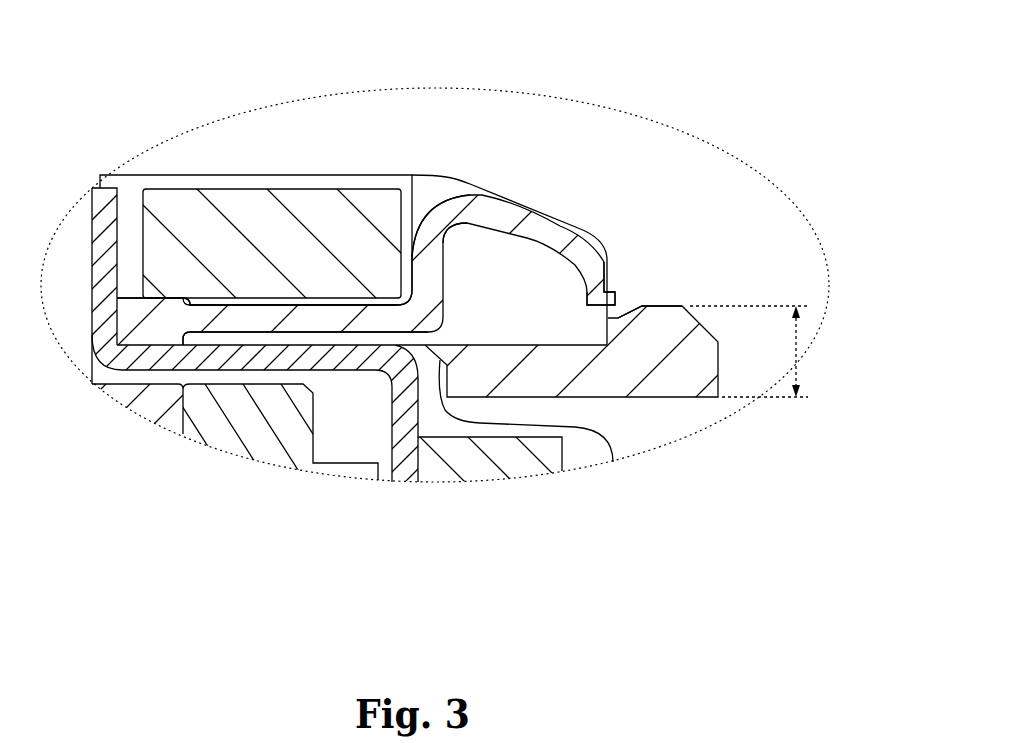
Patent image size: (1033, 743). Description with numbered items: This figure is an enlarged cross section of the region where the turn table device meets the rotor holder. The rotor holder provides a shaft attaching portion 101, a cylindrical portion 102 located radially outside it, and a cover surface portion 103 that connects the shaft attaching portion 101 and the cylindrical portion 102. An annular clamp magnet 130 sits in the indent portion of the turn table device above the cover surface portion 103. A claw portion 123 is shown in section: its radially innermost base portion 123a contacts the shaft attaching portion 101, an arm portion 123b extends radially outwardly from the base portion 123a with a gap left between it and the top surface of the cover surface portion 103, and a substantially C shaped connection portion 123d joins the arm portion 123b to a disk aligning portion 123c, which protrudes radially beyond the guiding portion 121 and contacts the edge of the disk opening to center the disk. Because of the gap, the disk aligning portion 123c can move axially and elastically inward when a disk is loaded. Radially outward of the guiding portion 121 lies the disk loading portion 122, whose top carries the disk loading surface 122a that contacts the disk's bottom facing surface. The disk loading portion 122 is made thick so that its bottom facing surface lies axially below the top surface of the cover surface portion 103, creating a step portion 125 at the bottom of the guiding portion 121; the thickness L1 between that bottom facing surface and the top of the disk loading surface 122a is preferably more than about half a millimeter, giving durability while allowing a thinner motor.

The shaft attaching portion 101 is at (102, 300).
The cylindrical portion 102 is at (403, 437).
The cover surface portion 103 is at (327, 357).
The guiding portion 121 is at (522, 197).
The disk loading portion 122 is at (673, 418).
The disk loading surface 122a is at (660, 306).
The claw portion 123 is at (447, 187).
The base portion 123a is at (157, 327).
The arm portion 123b is at (303, 322).
The disk aligning portion 123c is at (602, 290).
The connection portion 123d is at (495, 218).
The step portion 125 is at (613, 462).
The clamp magnet 130 is at (258, 212).
The thickness L1 is at (797, 347).